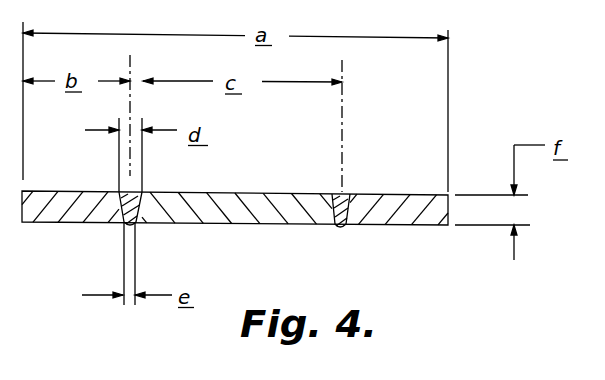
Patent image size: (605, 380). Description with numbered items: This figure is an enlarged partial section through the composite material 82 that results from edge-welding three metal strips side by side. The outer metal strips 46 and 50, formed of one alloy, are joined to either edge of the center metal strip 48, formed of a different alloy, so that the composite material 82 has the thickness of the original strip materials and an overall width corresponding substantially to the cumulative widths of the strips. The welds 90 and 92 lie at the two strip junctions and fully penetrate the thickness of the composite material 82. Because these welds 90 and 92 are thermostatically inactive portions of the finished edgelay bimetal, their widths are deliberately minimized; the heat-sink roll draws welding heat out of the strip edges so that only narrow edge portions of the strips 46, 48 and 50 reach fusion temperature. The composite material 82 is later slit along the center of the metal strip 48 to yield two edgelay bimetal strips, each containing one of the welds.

The metal strip 46 is at (85, 222).
The metal strip 48 is at (246, 224).
The metal strip 50 is at (395, 225).
The composite material 82 is at (457, 180).
The weld 90 is at (143, 191).
The weld 92 is at (347, 191).